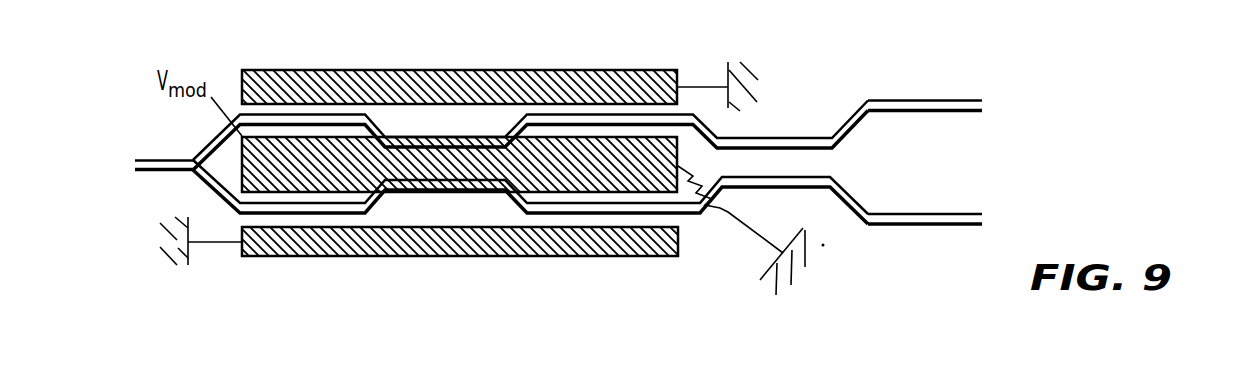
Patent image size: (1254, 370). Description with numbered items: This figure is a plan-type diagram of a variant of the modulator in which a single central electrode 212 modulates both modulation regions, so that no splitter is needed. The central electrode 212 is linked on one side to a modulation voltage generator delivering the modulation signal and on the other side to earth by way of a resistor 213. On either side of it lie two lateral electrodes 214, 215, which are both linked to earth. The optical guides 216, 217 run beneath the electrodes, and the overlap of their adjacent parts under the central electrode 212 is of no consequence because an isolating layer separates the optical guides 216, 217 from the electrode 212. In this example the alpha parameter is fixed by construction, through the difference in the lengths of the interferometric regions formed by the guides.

The central electrode 212 is at (242, 151).
The resistor 213 is at (677, 148).
The lateral electrode 214 is at (653, 70).
The lateral electrode 215 is at (612, 249).
The optical guide 216 is at (920, 100).
The optical guide 217 is at (908, 226).